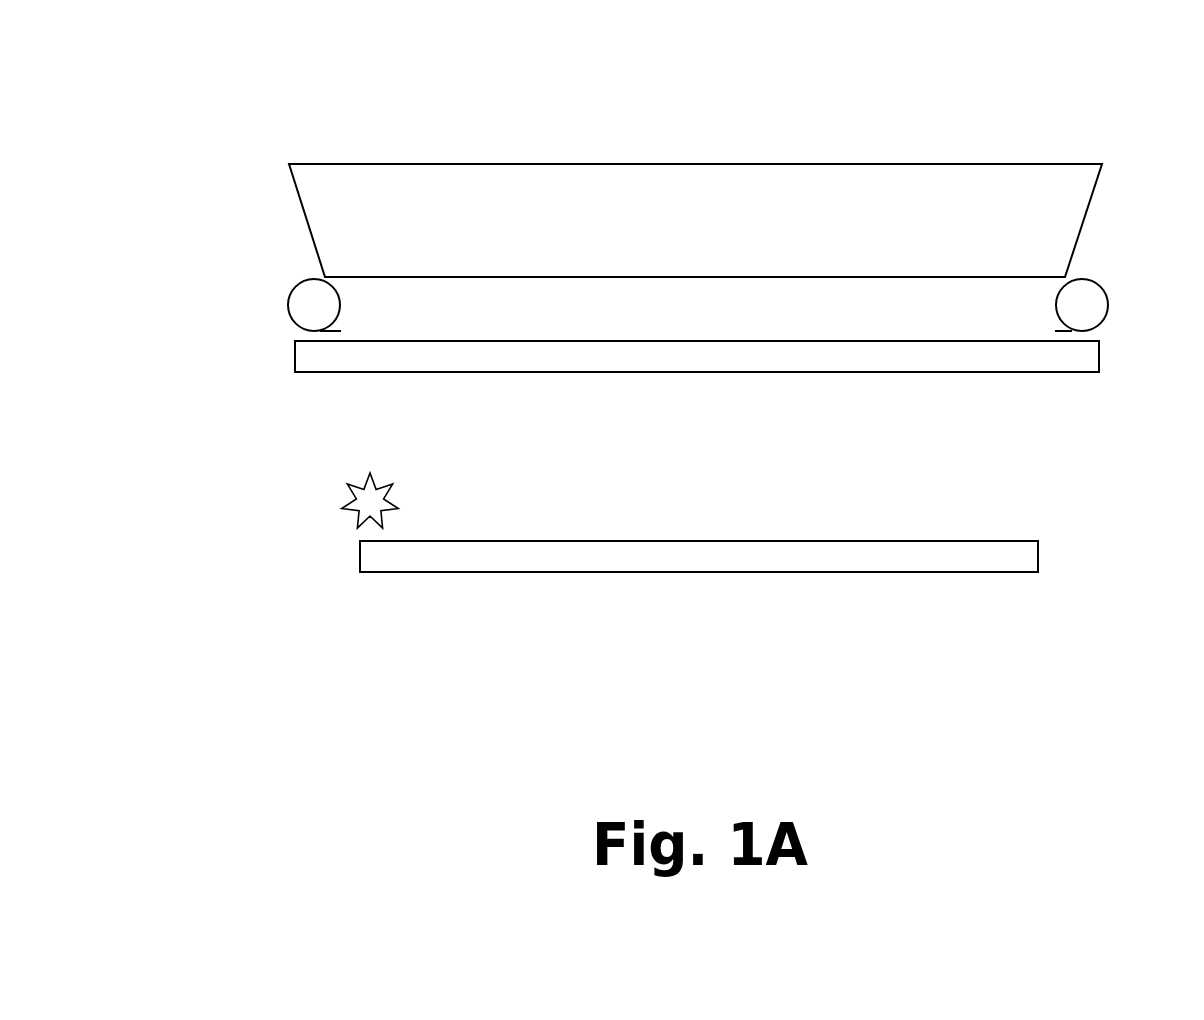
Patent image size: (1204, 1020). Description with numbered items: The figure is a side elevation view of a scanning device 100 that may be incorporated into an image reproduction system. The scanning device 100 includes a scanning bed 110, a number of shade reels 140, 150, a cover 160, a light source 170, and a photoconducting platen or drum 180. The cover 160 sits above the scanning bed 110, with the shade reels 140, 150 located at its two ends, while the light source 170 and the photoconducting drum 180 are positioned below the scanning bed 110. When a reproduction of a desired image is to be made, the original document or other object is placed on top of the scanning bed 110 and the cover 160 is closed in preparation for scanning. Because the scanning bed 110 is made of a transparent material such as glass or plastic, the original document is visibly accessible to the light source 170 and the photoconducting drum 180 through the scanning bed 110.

The scanning device 100 is at (390, 684).
The scanning bed 110 is at (1078, 353).
The shade reel 140 is at (302, 302).
The shade reel 150 is at (1090, 313).
The cover 160 is at (592, 163).
The light source 170 is at (347, 487).
The photoconducting platen or drum 180 is at (662, 558).